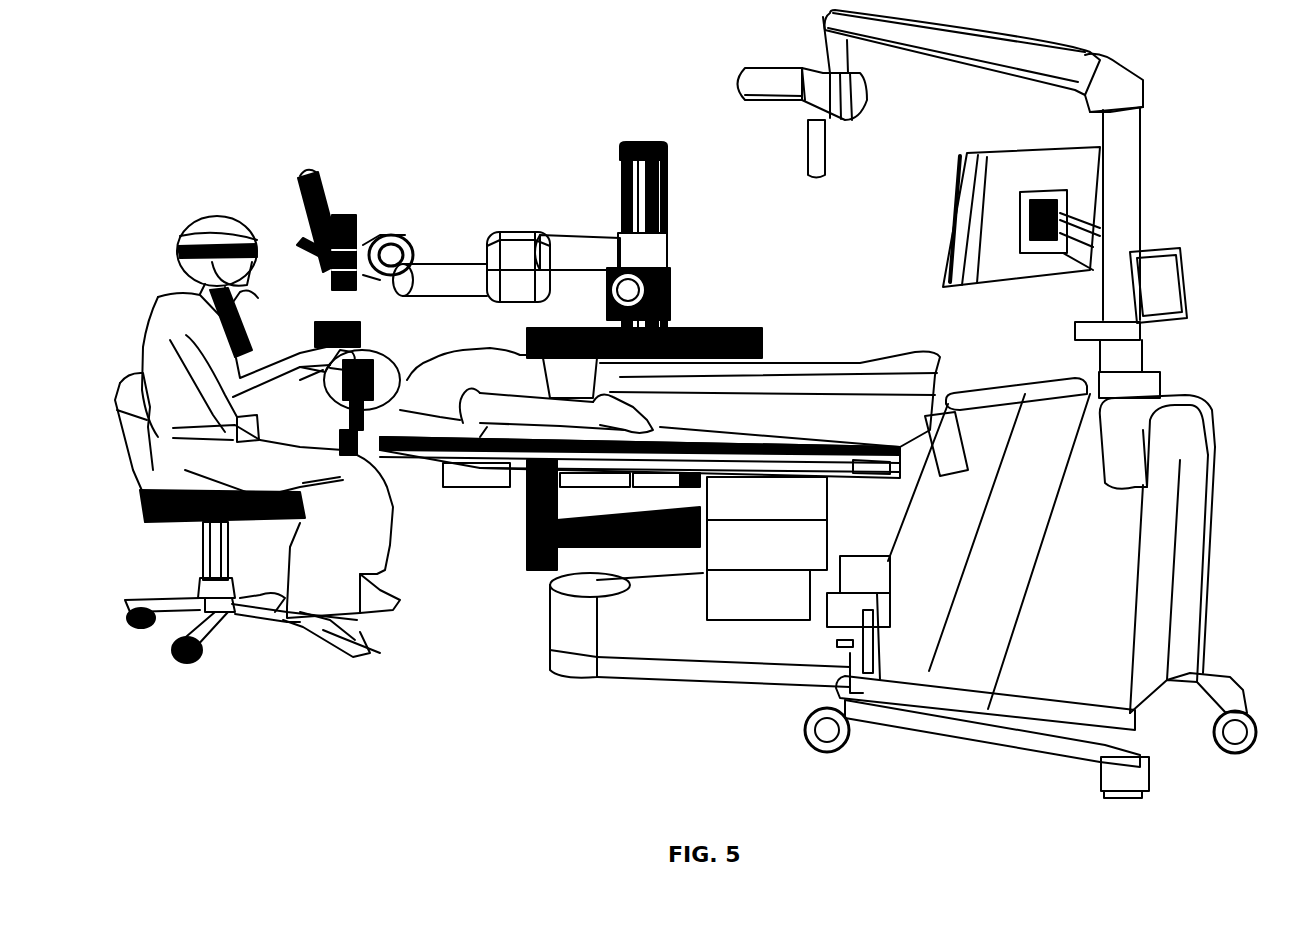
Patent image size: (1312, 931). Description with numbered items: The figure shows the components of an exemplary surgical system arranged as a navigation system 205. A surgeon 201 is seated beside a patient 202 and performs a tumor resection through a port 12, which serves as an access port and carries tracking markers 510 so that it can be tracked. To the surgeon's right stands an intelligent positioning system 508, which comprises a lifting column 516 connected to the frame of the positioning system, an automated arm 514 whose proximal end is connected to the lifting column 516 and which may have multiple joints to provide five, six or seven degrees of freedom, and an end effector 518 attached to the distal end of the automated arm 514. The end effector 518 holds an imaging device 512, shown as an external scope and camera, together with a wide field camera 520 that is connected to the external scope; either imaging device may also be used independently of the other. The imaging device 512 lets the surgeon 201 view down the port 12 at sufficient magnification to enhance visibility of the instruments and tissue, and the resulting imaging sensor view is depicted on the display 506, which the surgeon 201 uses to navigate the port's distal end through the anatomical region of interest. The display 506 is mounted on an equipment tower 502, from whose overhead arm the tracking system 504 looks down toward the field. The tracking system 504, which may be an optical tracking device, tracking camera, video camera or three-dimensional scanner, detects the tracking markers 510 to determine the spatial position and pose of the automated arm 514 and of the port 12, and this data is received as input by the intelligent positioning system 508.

The surgeon 201 is at (183, 230).
The port 12 is at (330, 335).
The patient 202 is at (444, 420).
The navigation system 205 is at (1213, 73).
The equipment tower 502 is at (1227, 518).
The tracking system 504 is at (730, 94).
The display 506 is at (943, 245).
The intelligent positioning system 508 is at (762, 326).
The tracking markers 510 is at (365, 340).
The imaging device 512 is at (330, 190).
The automated arm 514 is at (510, 222).
The lifting column 516 is at (673, 213).
The end effector 518 is at (307, 250).
The wide field camera 520 is at (352, 340).